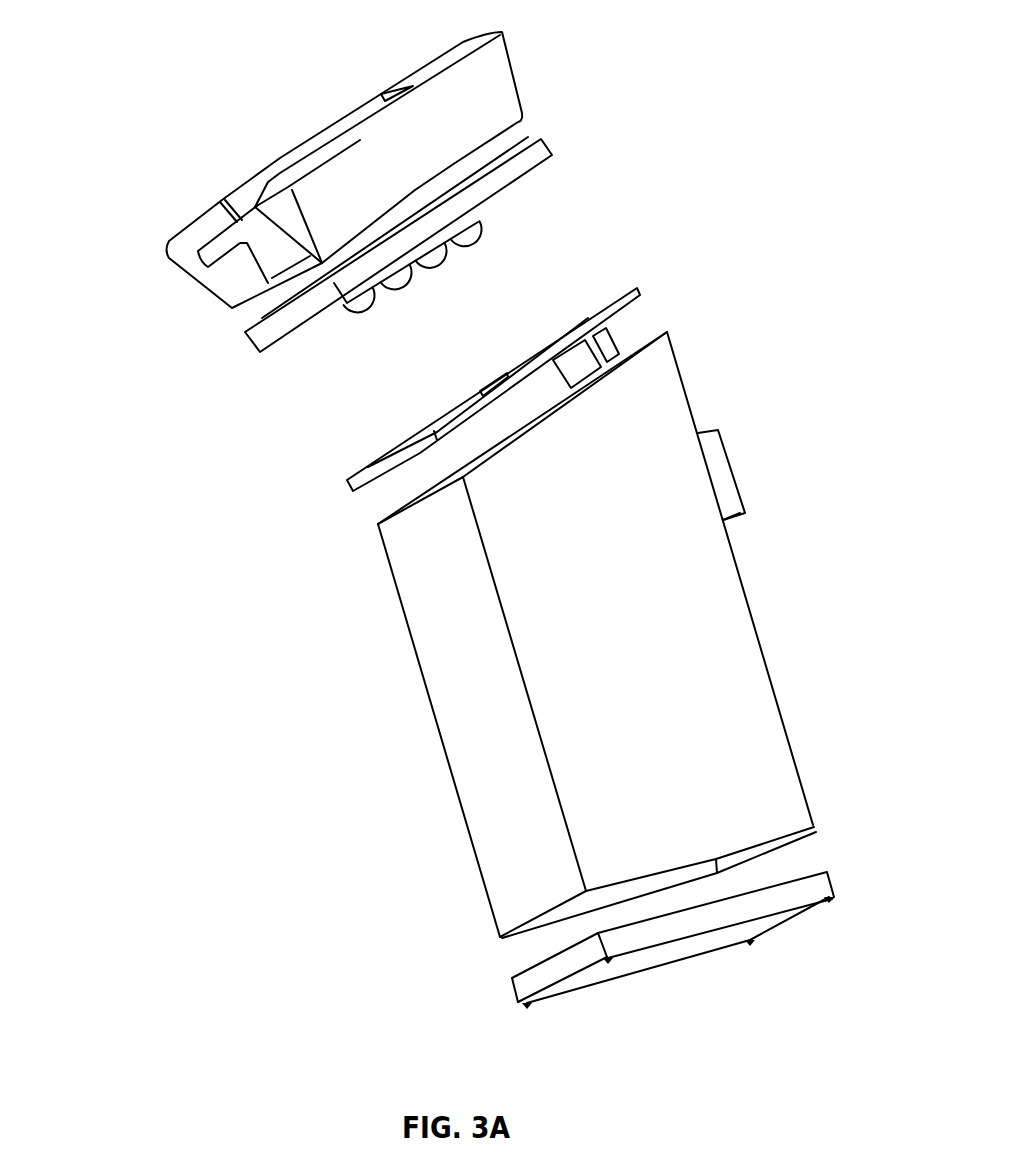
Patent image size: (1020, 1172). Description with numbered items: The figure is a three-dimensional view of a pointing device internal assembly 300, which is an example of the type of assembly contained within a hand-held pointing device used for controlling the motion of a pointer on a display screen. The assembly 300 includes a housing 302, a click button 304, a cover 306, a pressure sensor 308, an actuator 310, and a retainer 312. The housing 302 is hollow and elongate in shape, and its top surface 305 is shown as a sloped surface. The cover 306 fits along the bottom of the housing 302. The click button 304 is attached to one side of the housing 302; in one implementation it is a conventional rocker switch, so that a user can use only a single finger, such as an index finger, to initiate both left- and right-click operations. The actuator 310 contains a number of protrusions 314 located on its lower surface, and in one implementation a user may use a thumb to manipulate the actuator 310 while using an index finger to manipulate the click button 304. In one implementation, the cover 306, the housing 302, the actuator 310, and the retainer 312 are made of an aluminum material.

The pointing device internal assembly 300 is at (165, 78).
The housing 302 is at (387, 661).
The click button 304 is at (762, 461).
The top surface 305 is at (658, 312).
The cover 306 is at (487, 996).
The pressure sensor 308 is at (328, 487).
The actuator 310 is at (229, 345).
The retainer 312 is at (154, 232).
The protrusions 314 is at (477, 263).